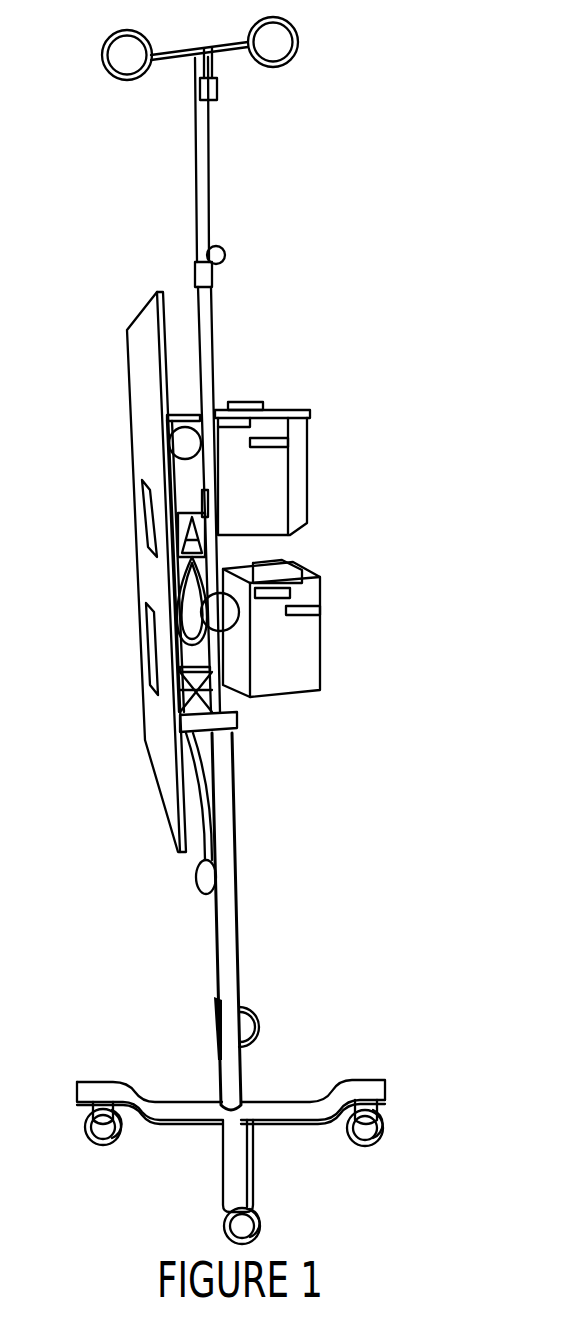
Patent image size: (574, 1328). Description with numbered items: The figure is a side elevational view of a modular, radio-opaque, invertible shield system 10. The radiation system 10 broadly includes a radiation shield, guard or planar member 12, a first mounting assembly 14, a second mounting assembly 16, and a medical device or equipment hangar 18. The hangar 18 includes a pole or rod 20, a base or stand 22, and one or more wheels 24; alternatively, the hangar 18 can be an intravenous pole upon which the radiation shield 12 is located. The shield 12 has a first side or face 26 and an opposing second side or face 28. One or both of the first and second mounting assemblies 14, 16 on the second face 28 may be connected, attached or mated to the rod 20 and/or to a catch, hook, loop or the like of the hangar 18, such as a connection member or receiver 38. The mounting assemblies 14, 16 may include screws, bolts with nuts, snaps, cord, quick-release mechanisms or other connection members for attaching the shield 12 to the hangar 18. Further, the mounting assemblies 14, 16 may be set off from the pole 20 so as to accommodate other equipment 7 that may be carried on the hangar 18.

The other equipment 7 is at (299, 540).
The modular radio-opaque invertible shield system 10 is at (125, 268).
The radiation shield 12 is at (111, 409).
The first mounting assembly 14 is at (217, 438).
The second mounting assembly 16 is at (244, 734).
The medical device or equipment hangar 18 is at (191, 933).
The pole 20 is at (205, 377).
The base 22 is at (176, 1161).
The wheels 24 is at (267, 1220).
The first side 26 is at (153, 688).
The second side 28 is at (184, 810).
The connection member 38 is at (282, 70).